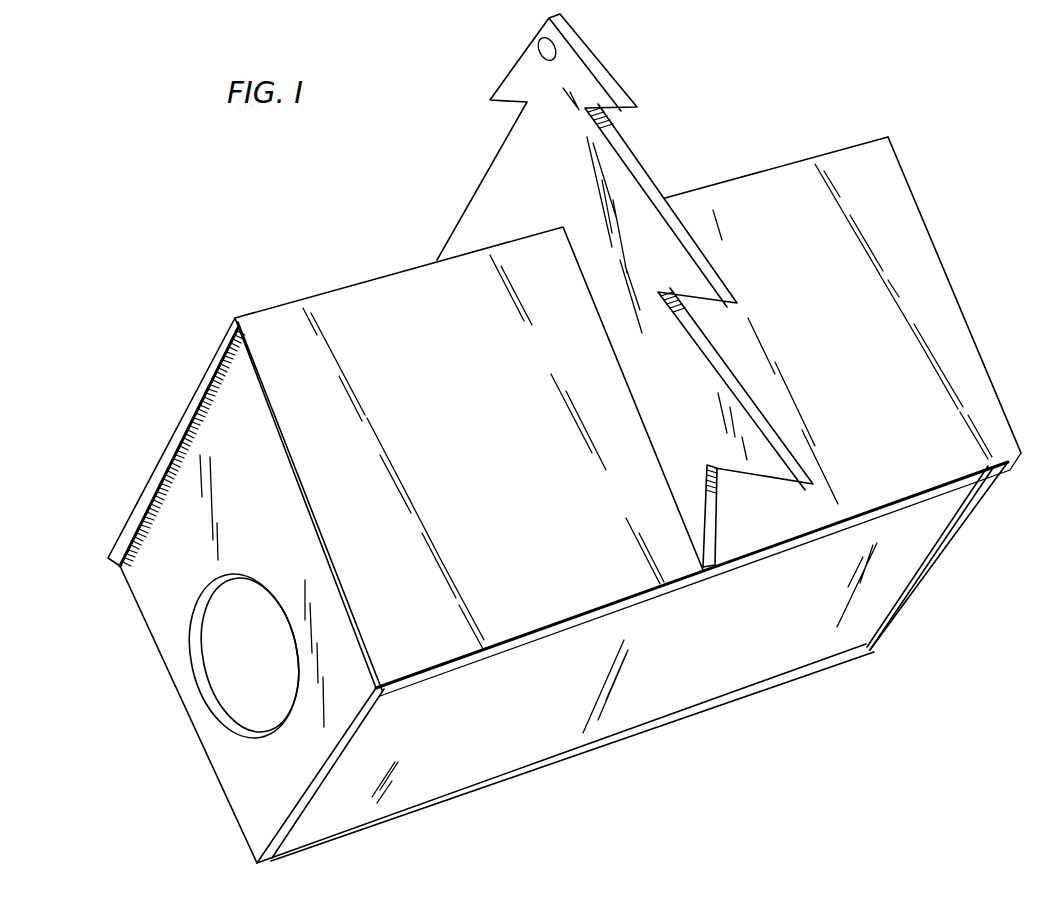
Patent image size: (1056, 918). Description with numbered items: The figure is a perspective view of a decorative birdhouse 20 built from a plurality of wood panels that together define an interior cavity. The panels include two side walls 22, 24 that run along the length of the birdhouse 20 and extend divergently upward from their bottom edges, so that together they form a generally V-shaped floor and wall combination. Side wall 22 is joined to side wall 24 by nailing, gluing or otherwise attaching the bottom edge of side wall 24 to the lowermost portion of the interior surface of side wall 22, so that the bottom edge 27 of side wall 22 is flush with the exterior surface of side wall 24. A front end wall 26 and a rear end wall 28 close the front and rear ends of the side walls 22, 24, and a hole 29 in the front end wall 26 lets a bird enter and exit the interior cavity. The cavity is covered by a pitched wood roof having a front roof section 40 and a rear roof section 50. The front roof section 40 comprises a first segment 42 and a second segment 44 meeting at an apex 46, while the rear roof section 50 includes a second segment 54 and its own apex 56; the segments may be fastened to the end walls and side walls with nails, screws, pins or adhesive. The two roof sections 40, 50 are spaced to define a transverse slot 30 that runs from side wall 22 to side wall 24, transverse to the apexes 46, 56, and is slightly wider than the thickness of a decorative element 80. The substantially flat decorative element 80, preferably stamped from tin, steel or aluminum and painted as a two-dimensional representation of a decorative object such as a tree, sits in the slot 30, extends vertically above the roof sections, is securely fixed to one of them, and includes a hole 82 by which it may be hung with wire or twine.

The birdhouse 20 is at (965, 244).
The side wall 22 is at (223, 647).
The side wall 24 is at (788, 662).
The end wall 26 is at (150, 583).
The bottom edge 27 is at (532, 760).
The end wall 28 is at (932, 567).
The hole 29 is at (227, 715).
The transverse slot 30 is at (705, 572).
The front roof section 40 is at (314, 295).
The first segment 42 is at (213, 355).
The second segment 44 is at (385, 310).
The apex 46 is at (433, 260).
The rear roof section 50 is at (798, 152).
The second segment 54 is at (872, 160).
The apex 56 is at (760, 175).
The decorative element 80 is at (574, 74).
The hole 82 is at (539, 50).